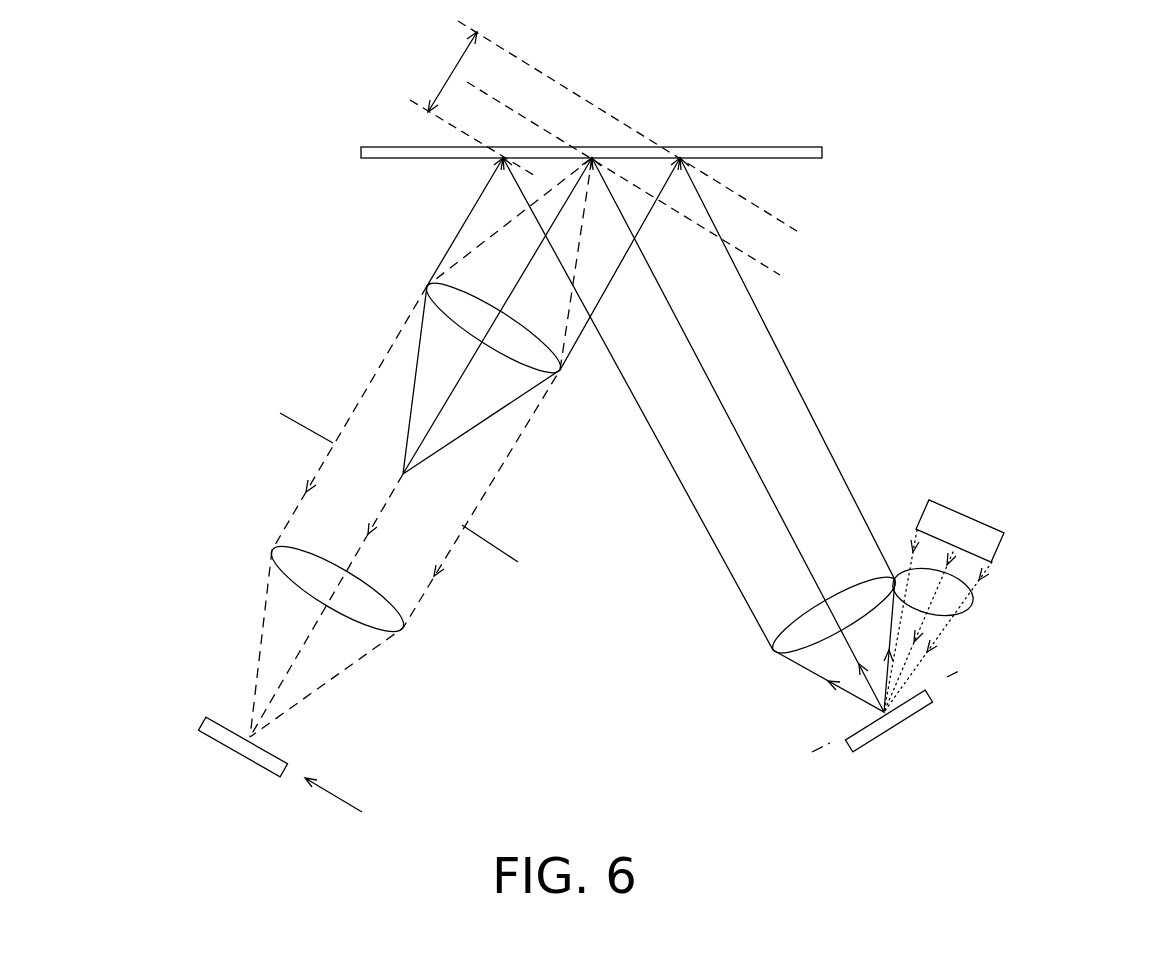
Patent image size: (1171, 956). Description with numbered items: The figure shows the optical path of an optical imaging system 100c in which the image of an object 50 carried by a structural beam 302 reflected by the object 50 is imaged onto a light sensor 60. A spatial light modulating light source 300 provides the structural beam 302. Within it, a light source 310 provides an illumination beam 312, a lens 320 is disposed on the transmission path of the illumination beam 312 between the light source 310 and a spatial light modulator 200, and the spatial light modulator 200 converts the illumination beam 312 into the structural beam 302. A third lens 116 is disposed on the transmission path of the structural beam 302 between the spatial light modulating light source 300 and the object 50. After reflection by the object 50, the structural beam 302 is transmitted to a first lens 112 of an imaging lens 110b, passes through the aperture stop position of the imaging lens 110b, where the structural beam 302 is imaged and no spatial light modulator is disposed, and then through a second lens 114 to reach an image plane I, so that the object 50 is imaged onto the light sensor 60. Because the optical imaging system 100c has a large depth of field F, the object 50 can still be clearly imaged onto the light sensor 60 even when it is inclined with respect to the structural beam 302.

The object 50 is at (822, 153).
The light sensor 60 is at (263, 757).
The structural beam 302 is at (375, 371).
The illumination beam 312 is at (905, 550).
The light source 310 is at (990, 540).
The lens 320 is at (960, 602).
The spatial light modulator 200 is at (925, 708).
The spatial light modulating light source 300 is at (982, 587).
The second lens 114 is at (403, 628).
The first lens 112 is at (556, 372).
The third lens 116 is at (773, 650).
The imaging lens 110b is at (582, 519).
The optical imaging system 100c is at (1075, 843).
The depth of field F is at (452, 72).
The image plane I is at (341, 810).